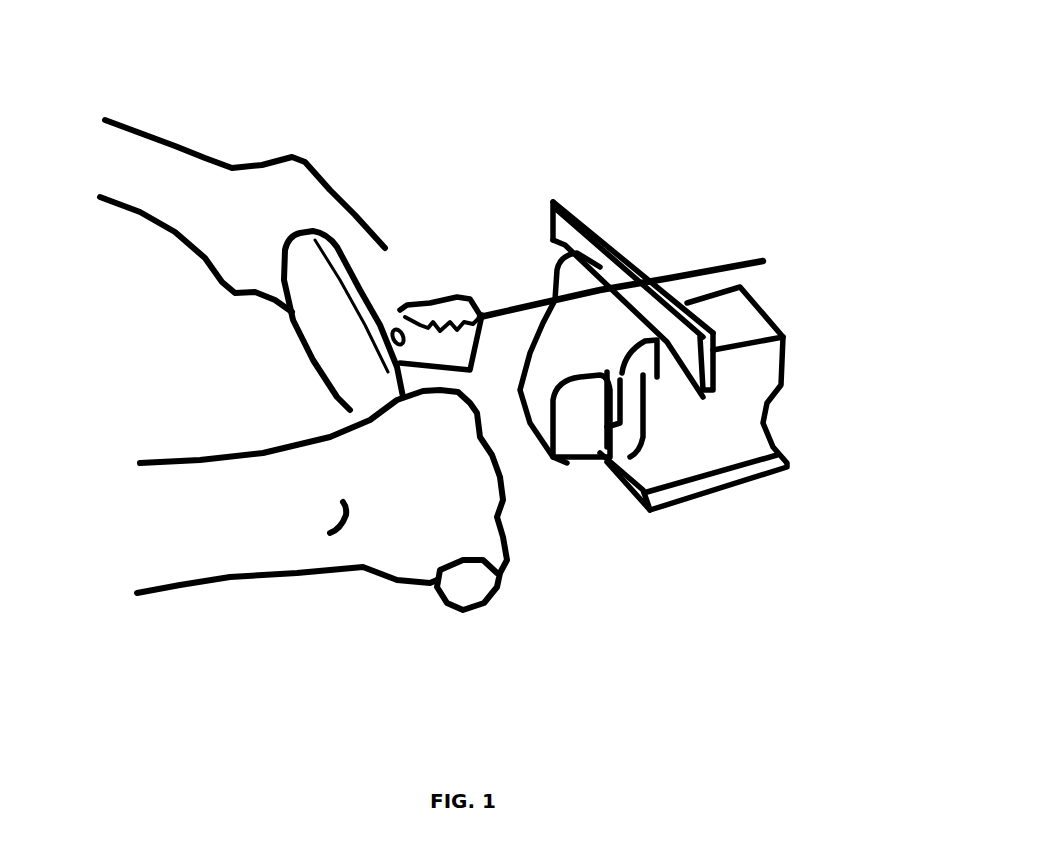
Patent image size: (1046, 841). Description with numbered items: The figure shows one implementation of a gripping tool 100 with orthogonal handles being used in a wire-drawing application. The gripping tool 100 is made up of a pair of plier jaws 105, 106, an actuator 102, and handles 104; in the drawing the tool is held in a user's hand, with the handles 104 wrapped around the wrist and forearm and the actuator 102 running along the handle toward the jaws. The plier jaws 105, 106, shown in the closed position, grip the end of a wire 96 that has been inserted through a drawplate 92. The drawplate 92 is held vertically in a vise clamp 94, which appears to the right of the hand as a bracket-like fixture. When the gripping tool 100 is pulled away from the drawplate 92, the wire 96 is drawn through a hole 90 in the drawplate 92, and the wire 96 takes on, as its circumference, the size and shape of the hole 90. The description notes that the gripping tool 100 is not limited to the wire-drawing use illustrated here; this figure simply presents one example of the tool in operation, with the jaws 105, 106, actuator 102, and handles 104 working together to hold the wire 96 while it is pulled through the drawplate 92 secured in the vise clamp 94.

The hole 90 is at (643, 272).
The drawplate 92 is at (687, 345).
The vise clamp 94 is at (748, 391).
The wire 96 is at (530, 317).
The gripping tool 100 is at (347, 350).
The actuator 102 is at (370, 292).
The handles 104 is at (374, 397).
The plier jaw 105 is at (440, 308).
The plier jaw 106 is at (464, 300).